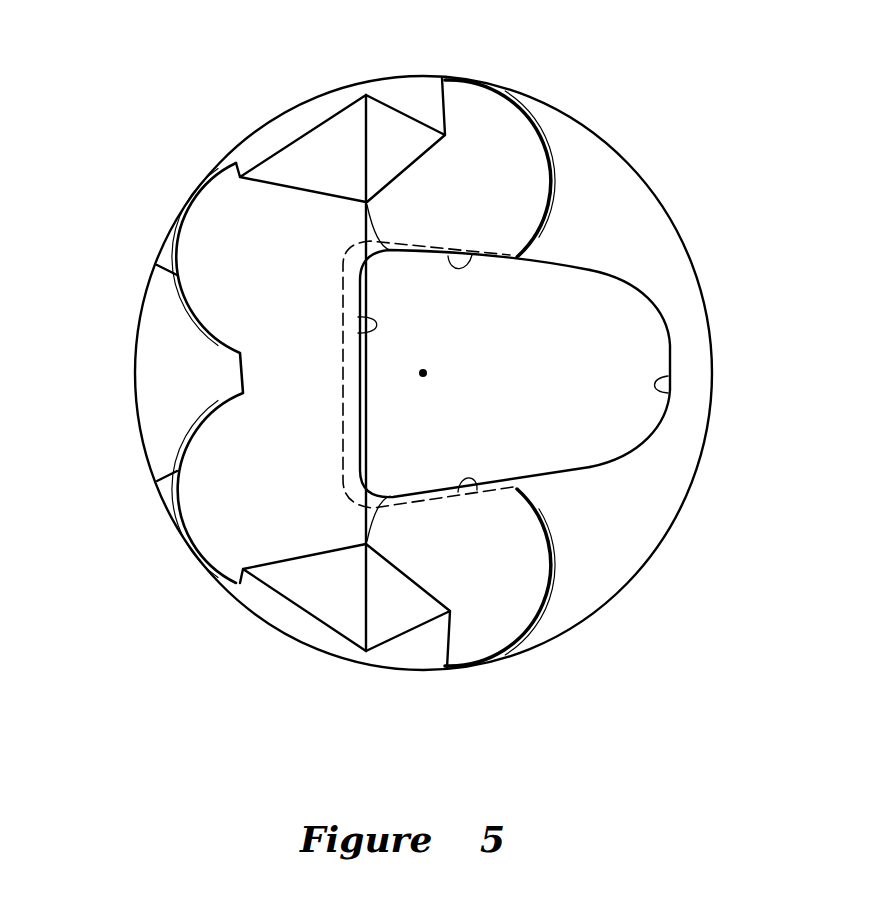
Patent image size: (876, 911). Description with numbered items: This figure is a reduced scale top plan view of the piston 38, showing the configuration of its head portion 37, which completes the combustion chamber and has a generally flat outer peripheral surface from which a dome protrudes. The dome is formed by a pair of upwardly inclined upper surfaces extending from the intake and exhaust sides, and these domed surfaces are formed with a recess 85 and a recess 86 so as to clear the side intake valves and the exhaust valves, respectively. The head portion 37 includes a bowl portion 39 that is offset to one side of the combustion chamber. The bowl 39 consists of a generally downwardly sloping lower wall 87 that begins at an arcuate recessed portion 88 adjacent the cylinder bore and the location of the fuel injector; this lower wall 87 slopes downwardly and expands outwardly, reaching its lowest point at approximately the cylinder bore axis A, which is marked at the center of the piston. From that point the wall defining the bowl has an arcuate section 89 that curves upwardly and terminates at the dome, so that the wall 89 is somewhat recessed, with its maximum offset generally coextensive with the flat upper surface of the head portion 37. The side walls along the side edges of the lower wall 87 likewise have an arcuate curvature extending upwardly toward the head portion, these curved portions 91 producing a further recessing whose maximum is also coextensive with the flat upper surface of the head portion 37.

The head portion 37 is at (168, 405).
The piston 38 is at (160, 233).
The bowl portion 39 is at (600, 291).
The recess 85 is at (515, 100).
The recess 86 is at (188, 268).
The lower wall 87 is at (645, 343).
The arcuate recessed portion 88 is at (655, 387).
The arcuate section 89 is at (360, 333).
The curved portions 91 is at (472, 255).
The cylinder bore axis A is at (417, 380).